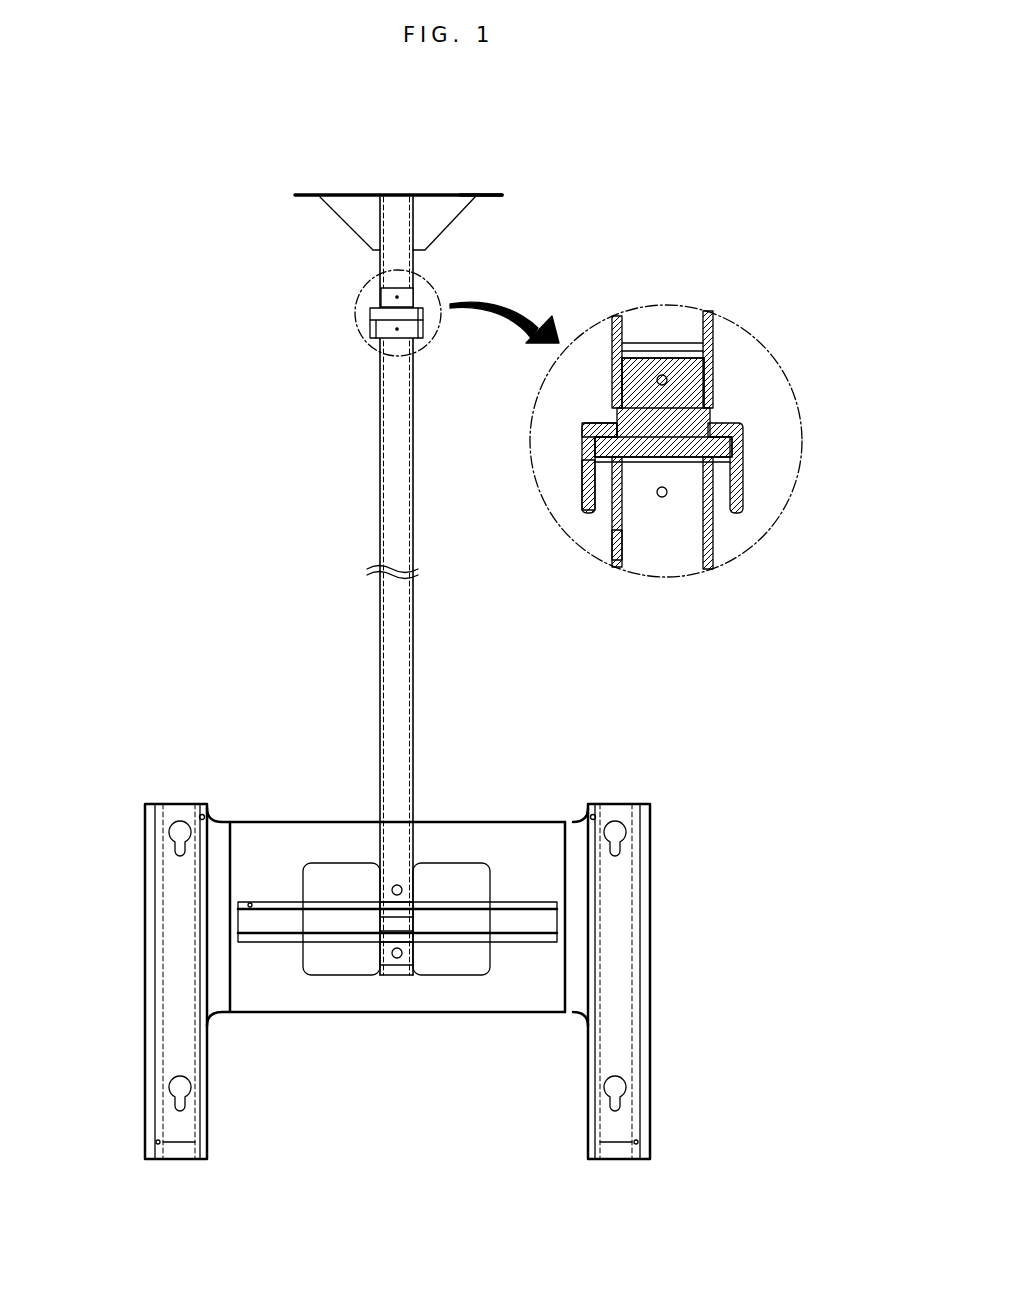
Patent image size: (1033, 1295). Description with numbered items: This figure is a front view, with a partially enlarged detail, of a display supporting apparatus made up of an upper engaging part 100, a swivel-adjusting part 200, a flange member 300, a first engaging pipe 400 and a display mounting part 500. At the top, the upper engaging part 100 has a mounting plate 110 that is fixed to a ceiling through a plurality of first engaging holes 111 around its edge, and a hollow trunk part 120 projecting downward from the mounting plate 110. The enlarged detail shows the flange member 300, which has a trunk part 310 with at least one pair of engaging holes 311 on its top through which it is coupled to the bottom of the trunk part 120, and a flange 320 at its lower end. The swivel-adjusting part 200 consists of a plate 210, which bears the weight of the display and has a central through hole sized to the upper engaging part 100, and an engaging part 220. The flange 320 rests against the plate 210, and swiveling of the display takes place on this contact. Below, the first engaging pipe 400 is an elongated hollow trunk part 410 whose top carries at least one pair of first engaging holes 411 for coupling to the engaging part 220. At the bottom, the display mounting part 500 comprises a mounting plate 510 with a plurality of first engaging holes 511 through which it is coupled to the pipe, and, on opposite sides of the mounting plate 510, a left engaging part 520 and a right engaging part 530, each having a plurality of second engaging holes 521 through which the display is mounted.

The upper engaging part 100 is at (331, 217).
The mounting plate 110 is at (363, 190).
The first engaging holes 111 is at (488, 190).
The trunk part 120 is at (676, 326).
The swivel-adjusting part 200 is at (369, 338).
The plate 210 is at (597, 432).
The engaging part 220 is at (587, 483).
The flange member 300 is at (387, 315).
The trunk part 310 is at (703, 372).
The engaging holes 311 is at (657, 383).
The flange 320 is at (731, 445).
The first engaging pipe 400 is at (374, 452).
The trunk part 410 is at (640, 553).
The first engaging holes 411 is at (657, 497).
The display mounting part 500 is at (392, 933).
The mounting plate 510 is at (530, 832).
The first engaging holes 511 is at (399, 884).
The left engaging part 520 is at (175, 957).
The second engaging holes 521 is at (170, 835).
The right engaging part 530 is at (622, 953).